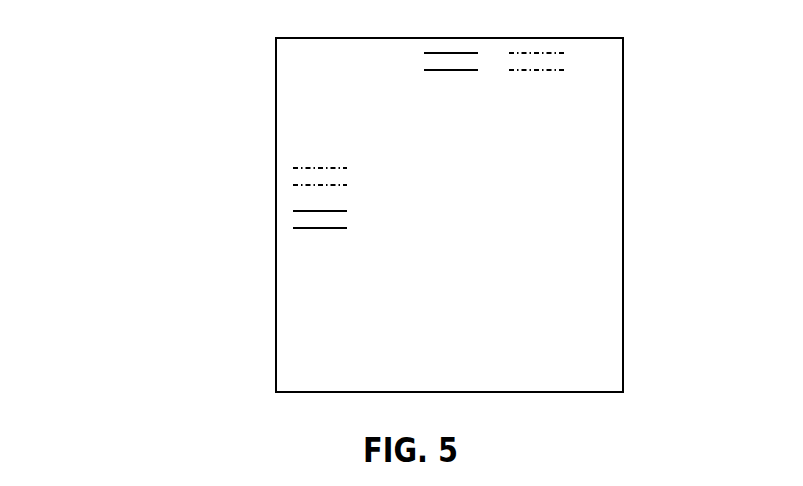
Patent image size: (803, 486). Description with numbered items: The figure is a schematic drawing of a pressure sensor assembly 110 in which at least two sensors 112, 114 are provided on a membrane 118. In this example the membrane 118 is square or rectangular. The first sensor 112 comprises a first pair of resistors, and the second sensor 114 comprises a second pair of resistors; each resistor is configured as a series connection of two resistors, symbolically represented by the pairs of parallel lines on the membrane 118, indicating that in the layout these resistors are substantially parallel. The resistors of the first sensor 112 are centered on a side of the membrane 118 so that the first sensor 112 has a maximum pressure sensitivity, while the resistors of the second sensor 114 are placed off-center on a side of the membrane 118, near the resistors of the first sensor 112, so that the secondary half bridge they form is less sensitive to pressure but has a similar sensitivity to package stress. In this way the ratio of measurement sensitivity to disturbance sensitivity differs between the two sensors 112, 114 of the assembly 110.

The pressure sensor assembly 110 is at (184, 95).
The first sensor 112 is at (261, 141).
The second sensor 114 is at (324, 149).
The membrane 118 is at (602, 185).